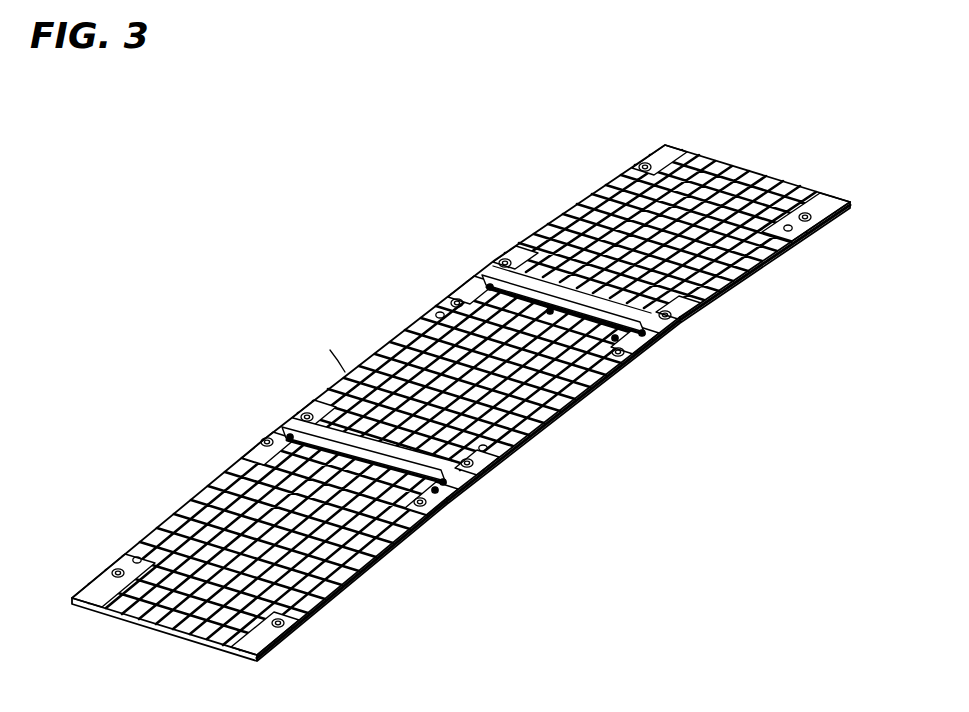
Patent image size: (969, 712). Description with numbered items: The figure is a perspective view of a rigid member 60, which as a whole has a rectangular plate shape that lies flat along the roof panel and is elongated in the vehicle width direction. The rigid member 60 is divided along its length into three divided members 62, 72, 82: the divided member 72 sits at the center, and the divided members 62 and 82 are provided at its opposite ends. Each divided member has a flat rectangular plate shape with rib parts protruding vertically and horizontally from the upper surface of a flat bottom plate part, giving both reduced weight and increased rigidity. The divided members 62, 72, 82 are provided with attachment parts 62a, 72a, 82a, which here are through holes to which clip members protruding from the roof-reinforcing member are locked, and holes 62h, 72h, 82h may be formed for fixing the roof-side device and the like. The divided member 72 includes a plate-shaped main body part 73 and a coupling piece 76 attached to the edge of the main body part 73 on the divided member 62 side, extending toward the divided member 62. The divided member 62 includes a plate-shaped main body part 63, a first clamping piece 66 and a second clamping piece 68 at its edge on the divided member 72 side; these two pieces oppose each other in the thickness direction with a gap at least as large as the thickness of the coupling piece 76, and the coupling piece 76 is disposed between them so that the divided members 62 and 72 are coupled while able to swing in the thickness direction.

The rigid member 60 is at (733, 115).
The divided member 62 is at (138, 538).
The attachment part 62a is at (113, 569).
The hole 62h is at (132, 555).
The main body part 63 is at (172, 634).
The first clamping piece 66 is at (443, 480).
The second clamping piece 68 is at (283, 424).
The divided member 72 is at (374, 353).
The attachment part 72a is at (452, 297).
The hole 72h is at (435, 310).
The main body part 73 is at (324, 351).
The coupling piece 76 is at (463, 484).
The divided member 82 is at (599, 169).
The attachment part 82a is at (645, 161).
The hole 82h is at (791, 233).